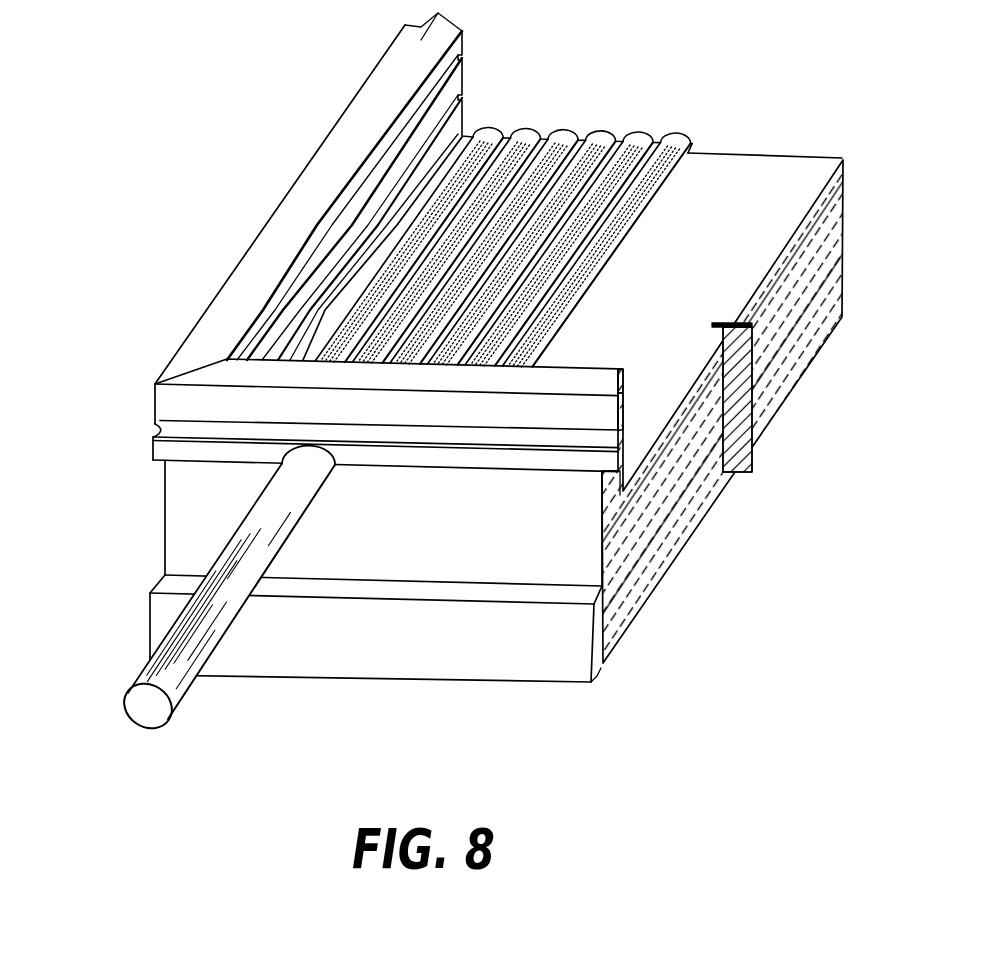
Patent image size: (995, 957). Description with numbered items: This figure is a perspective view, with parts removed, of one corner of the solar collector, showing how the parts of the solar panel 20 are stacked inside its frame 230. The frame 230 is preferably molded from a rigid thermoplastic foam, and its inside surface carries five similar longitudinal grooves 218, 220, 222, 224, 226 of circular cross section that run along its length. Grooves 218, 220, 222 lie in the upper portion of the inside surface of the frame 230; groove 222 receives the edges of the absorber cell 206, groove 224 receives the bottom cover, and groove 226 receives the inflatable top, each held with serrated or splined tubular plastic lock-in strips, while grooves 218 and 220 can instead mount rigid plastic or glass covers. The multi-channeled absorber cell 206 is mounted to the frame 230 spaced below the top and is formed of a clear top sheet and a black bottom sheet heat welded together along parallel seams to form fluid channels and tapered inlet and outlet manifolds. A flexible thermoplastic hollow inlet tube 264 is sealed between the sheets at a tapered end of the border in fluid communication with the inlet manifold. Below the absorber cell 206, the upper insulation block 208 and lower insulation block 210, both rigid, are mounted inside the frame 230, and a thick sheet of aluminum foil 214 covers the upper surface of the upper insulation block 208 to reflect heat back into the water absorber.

The solar panel 20 is at (322, 142).
The absorber cell 206 is at (525, 128).
The upper insulation block 208 is at (820, 213).
The lower insulation block 210 is at (788, 348).
The aluminum foil 214 is at (775, 167).
The groove 218 is at (620, 388).
The groove 220 is at (615, 435).
The groove 222 is at (620, 463).
The groove 224 is at (600, 670).
The groove 226 is at (155, 426).
The frame 230 is at (487, 681).
The inlet tube 264 is at (233, 622).